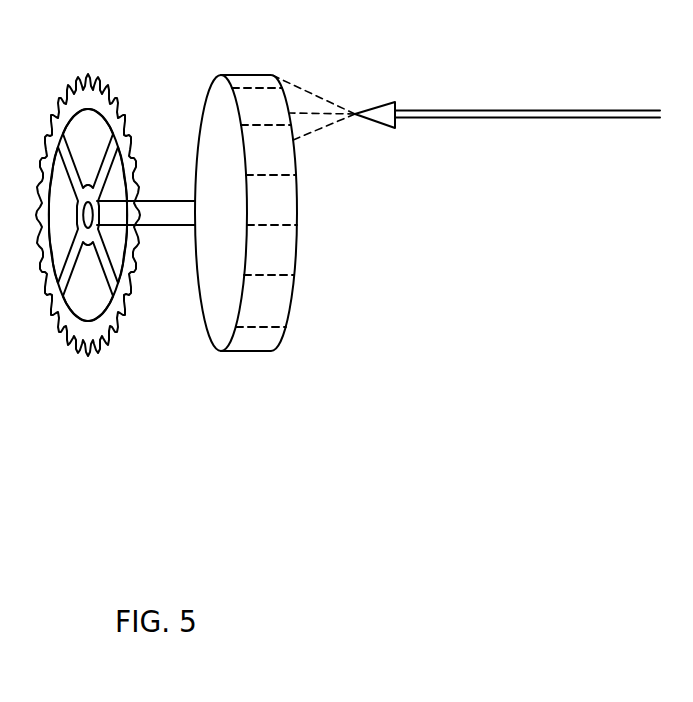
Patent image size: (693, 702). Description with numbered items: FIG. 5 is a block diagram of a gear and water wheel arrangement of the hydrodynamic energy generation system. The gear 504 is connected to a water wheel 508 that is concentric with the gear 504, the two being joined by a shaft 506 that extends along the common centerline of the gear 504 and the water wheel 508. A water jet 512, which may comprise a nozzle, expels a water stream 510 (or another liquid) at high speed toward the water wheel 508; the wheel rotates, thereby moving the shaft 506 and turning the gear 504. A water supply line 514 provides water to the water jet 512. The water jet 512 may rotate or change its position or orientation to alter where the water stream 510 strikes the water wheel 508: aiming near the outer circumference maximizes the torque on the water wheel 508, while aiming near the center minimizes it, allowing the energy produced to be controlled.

The gear 504 is at (111, 190).
The shaft 506 is at (159, 262).
The water wheel 508 is at (259, 188).
The water stream 510 is at (342, 88).
The water jet 512 is at (414, 90).
The water supply line 514 is at (527, 85).